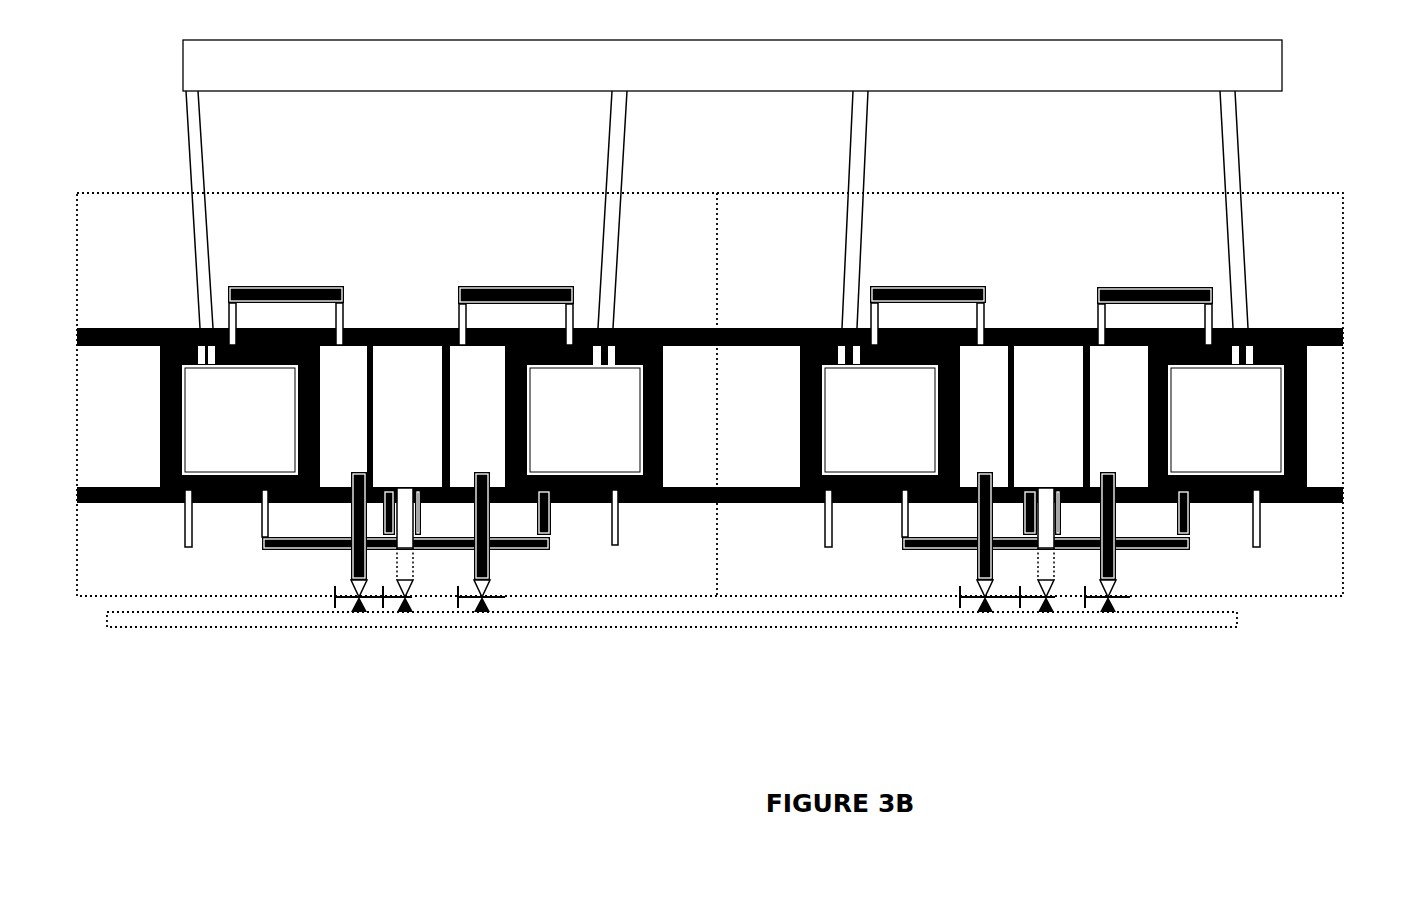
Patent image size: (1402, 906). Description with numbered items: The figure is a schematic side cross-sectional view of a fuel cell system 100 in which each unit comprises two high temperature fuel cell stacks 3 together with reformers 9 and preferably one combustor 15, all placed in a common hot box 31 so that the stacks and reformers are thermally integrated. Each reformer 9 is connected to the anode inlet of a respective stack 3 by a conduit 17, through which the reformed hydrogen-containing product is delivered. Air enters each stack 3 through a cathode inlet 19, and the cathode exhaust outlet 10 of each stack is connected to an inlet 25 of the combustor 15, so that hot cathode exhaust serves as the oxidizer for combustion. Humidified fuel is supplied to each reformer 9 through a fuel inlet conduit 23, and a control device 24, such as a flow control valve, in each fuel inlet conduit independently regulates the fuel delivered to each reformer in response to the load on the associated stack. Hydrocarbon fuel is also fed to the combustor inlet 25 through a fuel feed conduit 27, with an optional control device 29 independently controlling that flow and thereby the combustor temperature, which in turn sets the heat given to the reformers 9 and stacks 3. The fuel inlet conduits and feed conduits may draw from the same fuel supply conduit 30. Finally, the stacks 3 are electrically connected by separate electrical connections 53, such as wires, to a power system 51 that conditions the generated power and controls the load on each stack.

The fuel cell stack 3 is at (233, 432).
The reformer 9 is at (339, 432).
The cathode exhaust outlet 10 is at (267, 564).
The combustor 15 is at (399, 405).
The conduit 17 is at (275, 271).
The cathode inlet 19 is at (176, 551).
The fuel inlet conduit 23 is at (337, 522).
The control device 24 is at (326, 606).
The combustor inlet 25 is at (412, 474).
The fuel feed conduit 27 is at (388, 578).
The control device 29 is at (422, 611).
The fuel supply conduit 30 is at (593, 636).
The hot box 31 is at (1321, 318).
The power system 51 is at (1300, 72).
The electrical connections 53 is at (641, 132).
The system 100 is at (515, 773).